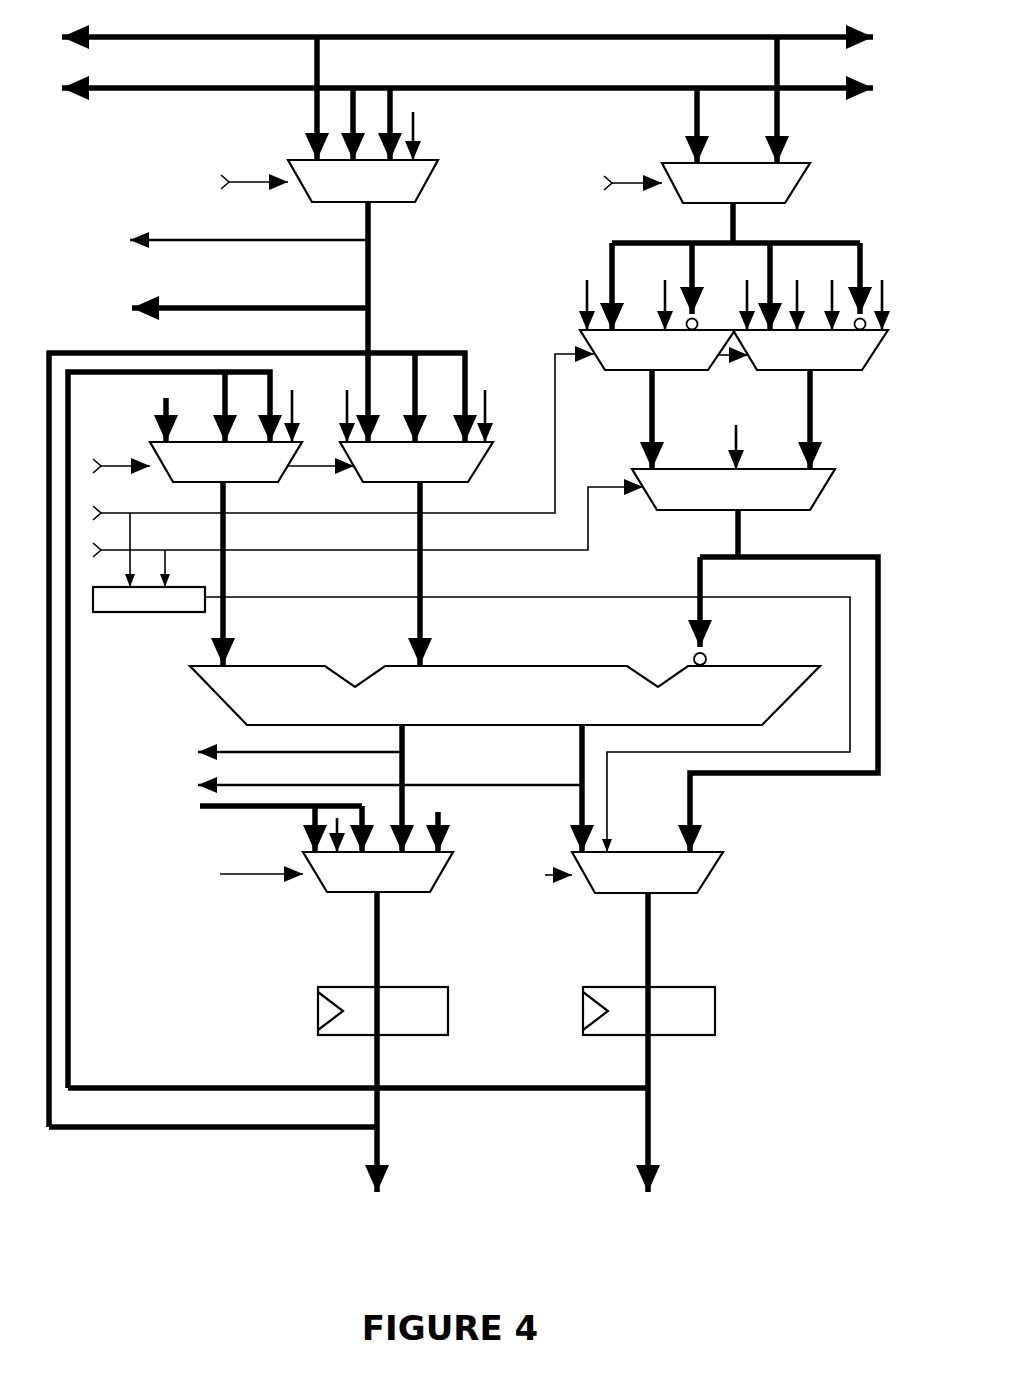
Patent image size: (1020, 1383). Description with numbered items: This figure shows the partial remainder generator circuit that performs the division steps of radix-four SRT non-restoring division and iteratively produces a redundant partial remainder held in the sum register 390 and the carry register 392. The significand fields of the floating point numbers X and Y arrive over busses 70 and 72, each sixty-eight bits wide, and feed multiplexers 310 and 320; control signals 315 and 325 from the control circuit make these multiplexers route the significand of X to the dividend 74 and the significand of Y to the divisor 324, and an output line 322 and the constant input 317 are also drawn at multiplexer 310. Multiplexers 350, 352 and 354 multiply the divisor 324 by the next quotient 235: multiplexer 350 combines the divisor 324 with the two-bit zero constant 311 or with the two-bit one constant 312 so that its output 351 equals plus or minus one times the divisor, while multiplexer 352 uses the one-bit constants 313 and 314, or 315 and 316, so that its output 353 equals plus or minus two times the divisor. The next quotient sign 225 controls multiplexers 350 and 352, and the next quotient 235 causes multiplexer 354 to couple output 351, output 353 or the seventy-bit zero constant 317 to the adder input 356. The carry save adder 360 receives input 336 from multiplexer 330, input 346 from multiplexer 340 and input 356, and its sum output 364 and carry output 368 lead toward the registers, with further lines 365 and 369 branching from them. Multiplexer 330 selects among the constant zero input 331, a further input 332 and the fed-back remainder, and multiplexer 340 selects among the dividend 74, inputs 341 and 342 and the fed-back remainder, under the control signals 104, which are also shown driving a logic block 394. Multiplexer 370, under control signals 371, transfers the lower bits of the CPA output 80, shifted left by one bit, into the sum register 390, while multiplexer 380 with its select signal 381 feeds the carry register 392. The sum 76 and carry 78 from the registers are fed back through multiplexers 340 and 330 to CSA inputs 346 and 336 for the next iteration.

The bus 70 is at (519, 30).
The bus 72 is at (576, 80).
The constant input 317 is at (423, 128).
The control signal 315 is at (266, 178).
The multiplexer 310 is at (427, 188).
The multiplexer output line 322 is at (194, 237).
The dividend 74 is at (260, 300).
The control signal 325 is at (643, 176).
The multiplexer 320 is at (803, 186).
The divisor 324 is at (740, 221).
The constant input 311 is at (580, 298).
The constant input 312 is at (663, 299).
The constant input 313 is at (742, 299).
The constant input 314 is at (796, 292).
The constant input 316 is at (884, 292).
The multiplexer 350 is at (580, 339).
The multiplexer 352 is at (878, 362).
The output of multiplexer 350 351 is at (645, 431).
The output of multiplexer 352 353 is at (804, 431).
The multiplexer 354 is at (829, 493).
The next quotient sign 225 is at (556, 448).
The next quotient 235 is at (593, 530).
The adder input 356 is at (708, 613).
The constant zero input 331 is at (175, 408).
The input signal 332 is at (291, 388).
The control signals 104 is at (130, 461).
The multiplexer 330 is at (264, 485).
The input signal 341 is at (339, 407).
The input signal 342 is at (490, 398).
The multiplexer 340 is at (485, 468).
The logic block 394 is at (113, 614).
The CSA input 336 is at (232, 621).
The CSA input 346 is at (430, 623).
The carry save adder 360 is at (207, 698).
The output line 365 is at (262, 751).
The sum output line 364 is at (408, 745).
The output line 369 is at (327, 784).
The carry register 392 is at (346, 823).
The CPA output 80 is at (250, 818).
The control signals 371 is at (265, 884).
The multiplexer 370 is at (446, 875).
The carry output line 368 is at (572, 745).
The select signal 381 is at (565, 883).
The 2:1 multiplexer 380 is at (718, 876).
The sum register 390 is at (452, 1011).
The sum 76 is at (383, 1148).
The carry 78 is at (658, 1148).